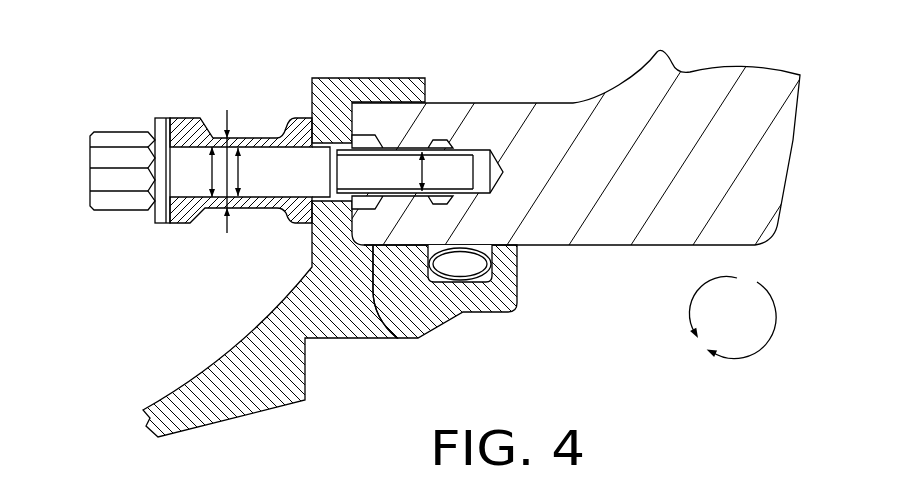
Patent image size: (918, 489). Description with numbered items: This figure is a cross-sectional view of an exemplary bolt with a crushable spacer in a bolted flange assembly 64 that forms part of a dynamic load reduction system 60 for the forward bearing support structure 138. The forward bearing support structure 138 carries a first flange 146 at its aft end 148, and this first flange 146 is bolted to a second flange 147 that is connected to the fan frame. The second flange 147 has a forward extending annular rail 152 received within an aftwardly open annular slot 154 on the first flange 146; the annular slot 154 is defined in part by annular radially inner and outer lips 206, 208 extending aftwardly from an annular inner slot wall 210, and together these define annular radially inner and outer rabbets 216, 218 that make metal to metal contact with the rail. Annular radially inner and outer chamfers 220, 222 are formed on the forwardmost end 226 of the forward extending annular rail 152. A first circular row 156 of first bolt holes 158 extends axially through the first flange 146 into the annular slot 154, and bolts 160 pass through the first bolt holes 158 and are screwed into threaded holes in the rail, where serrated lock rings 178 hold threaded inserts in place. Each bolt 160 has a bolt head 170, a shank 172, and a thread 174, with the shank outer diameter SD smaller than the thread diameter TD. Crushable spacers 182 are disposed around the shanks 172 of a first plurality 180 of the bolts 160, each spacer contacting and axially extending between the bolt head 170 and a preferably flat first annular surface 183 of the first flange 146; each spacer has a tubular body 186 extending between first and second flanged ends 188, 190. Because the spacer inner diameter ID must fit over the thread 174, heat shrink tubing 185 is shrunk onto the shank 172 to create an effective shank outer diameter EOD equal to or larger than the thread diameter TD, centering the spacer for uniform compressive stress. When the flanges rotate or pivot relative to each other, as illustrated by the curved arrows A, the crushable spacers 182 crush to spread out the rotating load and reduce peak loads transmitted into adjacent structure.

The dynamic load reduction system 60 is at (303, 72).
The bolted flange assembly 64 is at (452, 68).
The forward bearing support structure 138 is at (222, 420).
The first flange 146 is at (382, 78).
The second flange 147 is at (738, 70).
The aft end 148 is at (343, 340).
The forward extending annular rail 152 is at (493, 102).
The annular slot 154 is at (452, 244).
The first circular row 156 is at (311, 80).
The first bolt holes 158 is at (311, 243).
The bolts 160 is at (91, 150).
The bolt head 170 is at (112, 130).
The shank 172 is at (222, 163).
The thread 174 is at (470, 194).
The serrated lock rings 178 is at (362, 196).
The first plurality 180 is at (80, 192).
The crushable spacers 182 is at (172, 116).
The first annular surface 183 is at (298, 285).
The heat shrink tubing 185 is at (278, 136).
The tubular body 186 is at (205, 212).
The first flanged end 188 is at (180, 225).
The second flanged end 190 is at (290, 220).
The inner lip 206 is at (519, 283).
The outer lip 208 is at (428, 94).
The inner slot wall 210 is at (337, 190).
The inner rabbet 216 is at (395, 204).
The outer rabbet 218 is at (358, 105).
The inner chamfer 220 is at (388, 336).
The outer chamfer 222 is at (355, 78).
The forwardmost end 226 is at (440, 318).
The curved arrows A is at (762, 278).
The spacer inner diameter ID is at (210, 170).
The shank outer diameter SD is at (240, 167).
The effective shank outer diameter EOD is at (228, 228).
The thread diameter TD is at (425, 172).